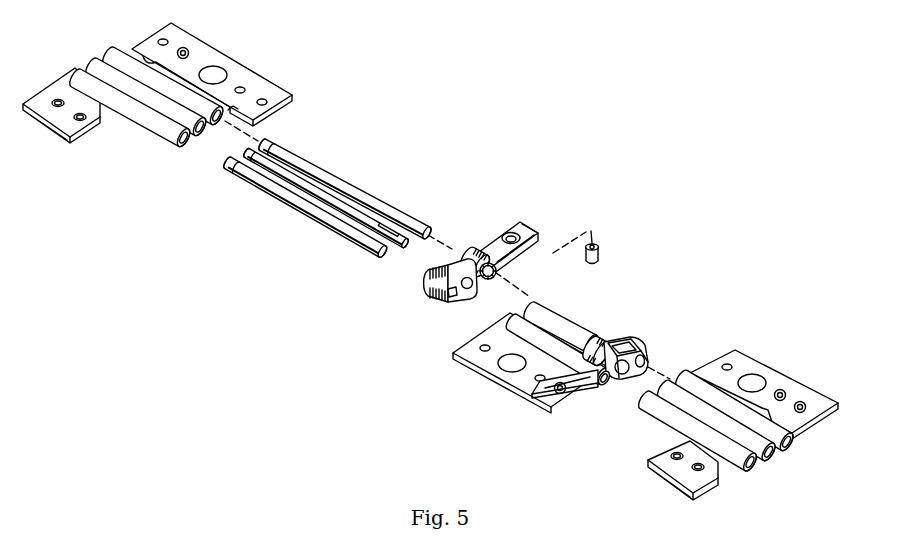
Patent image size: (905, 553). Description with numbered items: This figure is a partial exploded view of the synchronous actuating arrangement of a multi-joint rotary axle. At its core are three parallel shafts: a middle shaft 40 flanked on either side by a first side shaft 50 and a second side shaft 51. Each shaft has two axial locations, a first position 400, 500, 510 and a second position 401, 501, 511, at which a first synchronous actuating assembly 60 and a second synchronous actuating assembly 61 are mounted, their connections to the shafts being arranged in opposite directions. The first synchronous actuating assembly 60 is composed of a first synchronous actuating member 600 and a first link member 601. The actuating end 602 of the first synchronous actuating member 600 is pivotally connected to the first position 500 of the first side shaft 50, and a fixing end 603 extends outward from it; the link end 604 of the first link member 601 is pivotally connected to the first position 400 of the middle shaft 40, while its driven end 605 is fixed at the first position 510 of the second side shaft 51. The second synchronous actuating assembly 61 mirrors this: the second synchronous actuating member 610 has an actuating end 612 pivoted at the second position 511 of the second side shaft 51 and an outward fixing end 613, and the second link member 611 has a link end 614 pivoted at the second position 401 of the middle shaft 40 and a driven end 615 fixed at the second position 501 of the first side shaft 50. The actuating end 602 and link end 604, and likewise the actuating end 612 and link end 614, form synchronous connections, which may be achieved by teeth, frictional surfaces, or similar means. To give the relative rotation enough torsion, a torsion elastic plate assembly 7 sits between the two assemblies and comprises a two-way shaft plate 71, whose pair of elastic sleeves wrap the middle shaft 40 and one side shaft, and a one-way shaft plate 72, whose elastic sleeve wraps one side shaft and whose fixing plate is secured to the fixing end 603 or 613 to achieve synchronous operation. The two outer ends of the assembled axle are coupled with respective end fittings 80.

The torsion elastic plate assembly 7 is at (127, 146).
The middle shaft 40 is at (326, 187).
The first side shaft 50 is at (293, 216).
The second side shaft 51 is at (349, 174).
The first synchronous actuating assembly 60 is at (630, 380).
The second synchronous actuating assembly 61 is at (477, 259).
The two-way shaft plate 71 is at (190, 137).
The one-way shaft plate 72 is at (232, 114).
The end fitting 80 is at (72, 50).
The first position 400 is at (385, 230).
The second position 401 is at (277, 168).
The first position 500 is at (370, 247).
The second position 501 is at (250, 177).
The first position 510 is at (403, 218).
The second position 511 is at (282, 143).
The first synchronous actuating member 600 is at (593, 404).
The first link member 601 is at (645, 367).
The actuating end 602 is at (600, 345).
The fixing end 603 is at (545, 397).
The link end 604 is at (629, 339).
The driven end 605 is at (648, 340).
The second synchronous actuating member 610 is at (524, 235).
The second link member 611 is at (465, 254).
The actuating end 612 is at (489, 282).
The fixing end 613 is at (527, 225).
The link end 614 is at (474, 300).
The driven end 615 is at (429, 297).